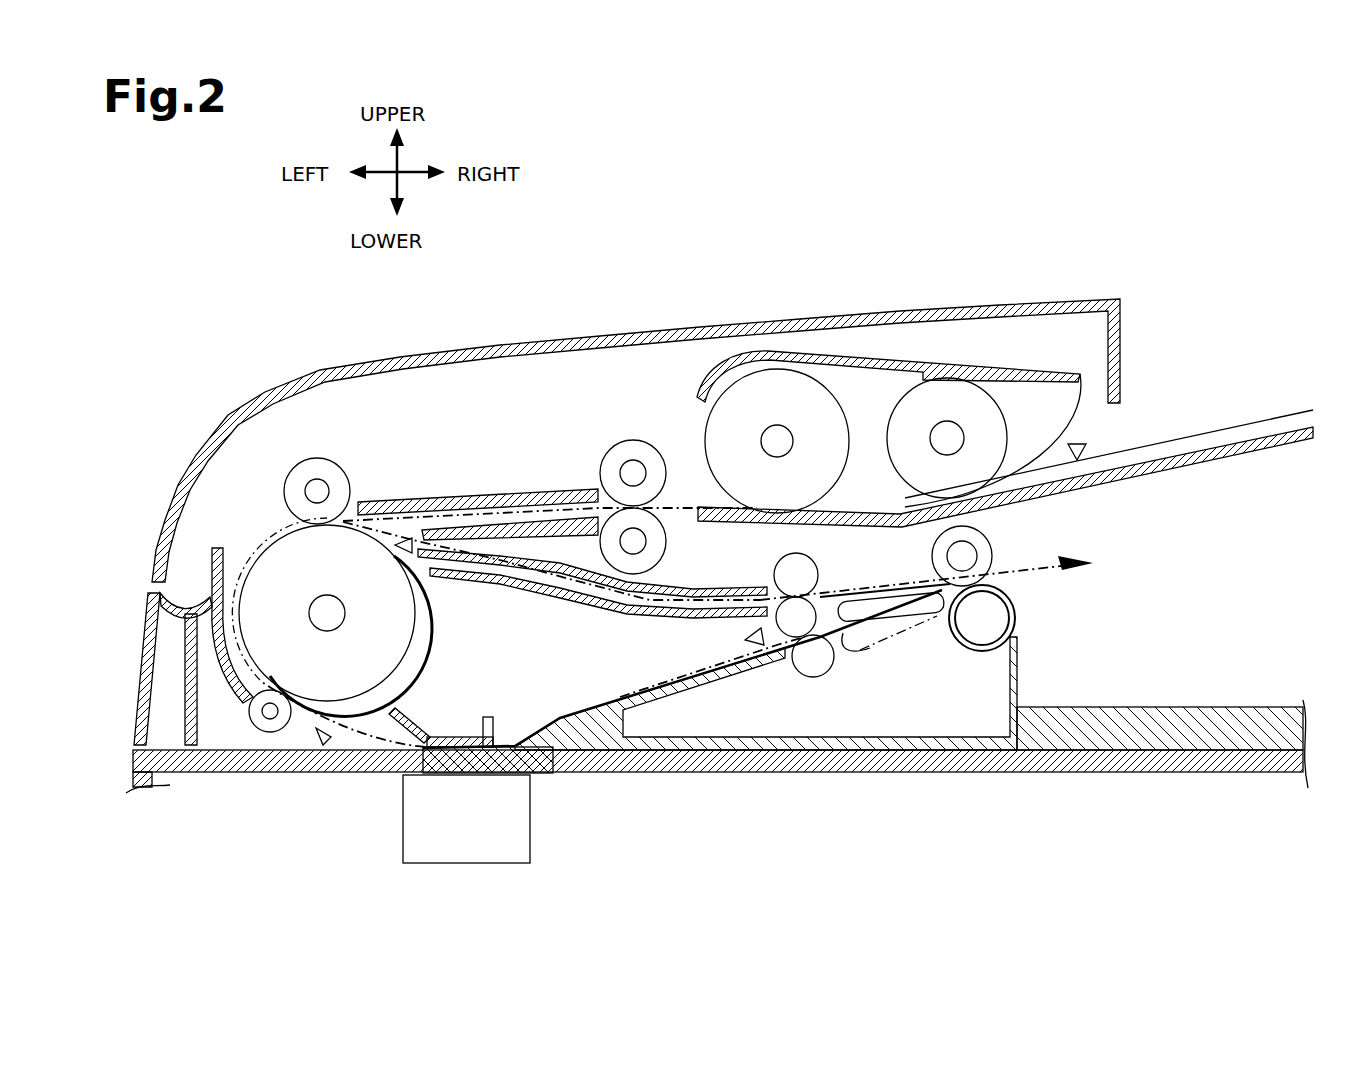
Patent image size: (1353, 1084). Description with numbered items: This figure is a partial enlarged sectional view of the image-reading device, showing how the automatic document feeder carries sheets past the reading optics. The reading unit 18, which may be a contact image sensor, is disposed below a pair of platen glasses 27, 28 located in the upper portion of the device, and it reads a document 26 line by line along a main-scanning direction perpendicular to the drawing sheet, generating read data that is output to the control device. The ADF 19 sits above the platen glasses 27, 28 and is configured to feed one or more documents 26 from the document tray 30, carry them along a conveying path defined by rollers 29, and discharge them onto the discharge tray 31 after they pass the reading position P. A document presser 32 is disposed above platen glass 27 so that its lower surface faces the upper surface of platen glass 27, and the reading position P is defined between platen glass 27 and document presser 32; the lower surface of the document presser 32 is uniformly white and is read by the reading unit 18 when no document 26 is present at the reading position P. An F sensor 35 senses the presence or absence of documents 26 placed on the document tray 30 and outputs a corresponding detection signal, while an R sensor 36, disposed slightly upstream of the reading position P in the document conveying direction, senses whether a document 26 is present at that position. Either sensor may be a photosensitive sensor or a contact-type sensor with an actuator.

The ADF 19 is at (930, 302).
The rollers 29 is at (625, 440).
The document 26 is at (1232, 430).
The document tray 30 is at (1215, 470).
The F sensor 35 is at (1078, 443).
The discharge tray 31 is at (1190, 705).
The platen glass 28 is at (820, 775).
The platen glass 27 is at (423, 762).
The document presser 32 is at (425, 728).
The R sensor 36 is at (320, 745).
The reading unit 18 is at (470, 863).
The reading position P is at (459, 726).